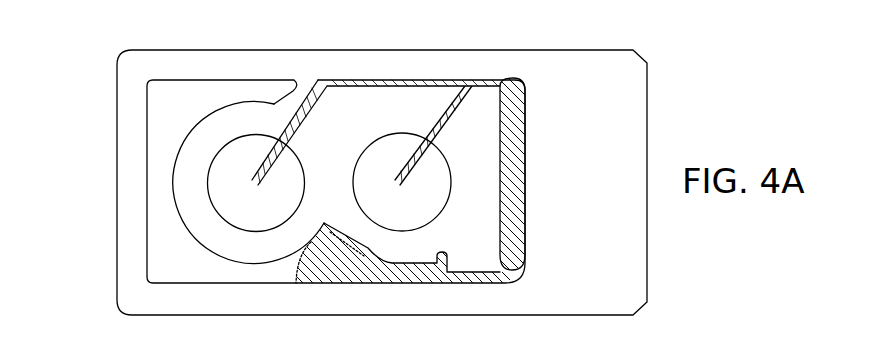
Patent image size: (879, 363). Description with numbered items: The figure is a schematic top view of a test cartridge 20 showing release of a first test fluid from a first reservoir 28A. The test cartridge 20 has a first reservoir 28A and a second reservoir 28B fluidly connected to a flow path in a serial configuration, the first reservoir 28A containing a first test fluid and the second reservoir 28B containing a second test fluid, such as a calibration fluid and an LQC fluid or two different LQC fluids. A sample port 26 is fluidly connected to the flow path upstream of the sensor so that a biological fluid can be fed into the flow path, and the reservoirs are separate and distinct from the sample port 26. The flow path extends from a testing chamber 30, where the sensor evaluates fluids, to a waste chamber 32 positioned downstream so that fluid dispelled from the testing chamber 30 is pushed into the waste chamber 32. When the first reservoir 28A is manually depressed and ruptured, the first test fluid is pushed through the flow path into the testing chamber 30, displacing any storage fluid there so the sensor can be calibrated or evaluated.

The test cartridge 20 is at (623, 31).
The sample port 26 is at (490, 73).
The first reservoir 28A is at (225, 173).
The second reservoir 28B is at (398, 198).
The testing chamber 30 is at (525, 89).
The waste chamber 32 is at (147, 217).